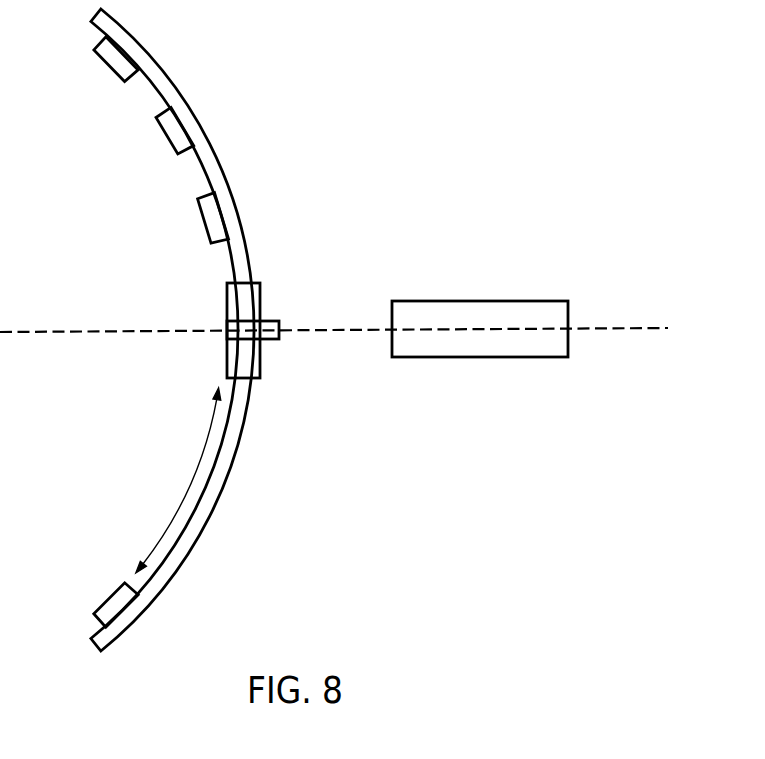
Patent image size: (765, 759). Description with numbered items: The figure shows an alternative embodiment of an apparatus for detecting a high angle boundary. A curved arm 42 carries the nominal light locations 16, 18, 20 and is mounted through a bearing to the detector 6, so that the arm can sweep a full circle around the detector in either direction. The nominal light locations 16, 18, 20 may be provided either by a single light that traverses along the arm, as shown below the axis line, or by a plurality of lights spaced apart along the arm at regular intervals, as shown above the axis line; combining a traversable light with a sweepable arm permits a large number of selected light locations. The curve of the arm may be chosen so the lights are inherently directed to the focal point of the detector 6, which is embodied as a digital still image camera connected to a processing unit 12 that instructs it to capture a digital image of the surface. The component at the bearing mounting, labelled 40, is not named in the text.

The detector 6 is at (268, 322).
The processing unit 12 is at (527, 328).
The nominal light location 16 is at (205, 223).
The nominal light location 18 is at (162, 132).
The nominal light location 20 is at (110, 68).
The carriage 40 is at (252, 367).
The curved arm 42 is at (188, 123).